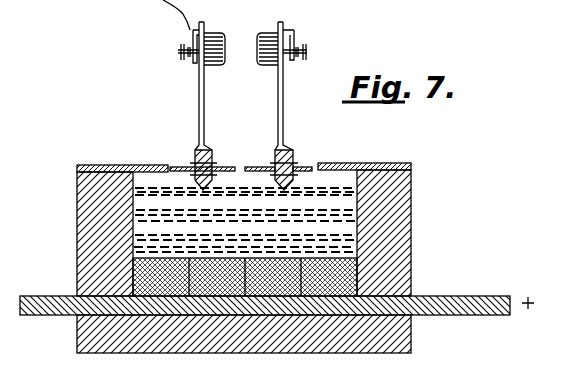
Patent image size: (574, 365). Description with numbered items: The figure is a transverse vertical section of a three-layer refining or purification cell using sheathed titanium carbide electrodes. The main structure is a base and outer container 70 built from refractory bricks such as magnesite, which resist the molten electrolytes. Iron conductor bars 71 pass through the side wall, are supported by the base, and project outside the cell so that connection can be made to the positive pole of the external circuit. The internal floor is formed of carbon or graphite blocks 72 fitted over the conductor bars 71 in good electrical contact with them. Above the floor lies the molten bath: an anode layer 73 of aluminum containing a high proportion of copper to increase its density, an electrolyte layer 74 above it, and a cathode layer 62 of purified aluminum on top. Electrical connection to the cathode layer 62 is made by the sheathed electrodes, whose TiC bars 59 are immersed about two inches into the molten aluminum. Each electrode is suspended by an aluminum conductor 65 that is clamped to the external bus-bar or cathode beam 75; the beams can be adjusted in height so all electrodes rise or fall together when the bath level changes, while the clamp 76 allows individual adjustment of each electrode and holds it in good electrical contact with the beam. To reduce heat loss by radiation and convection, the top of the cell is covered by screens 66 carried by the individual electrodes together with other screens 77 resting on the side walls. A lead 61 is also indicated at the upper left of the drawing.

The TiC bar 59 is at (195, 162).
The lead 61 is at (53, 1).
The cathode layer 62 is at (133, 191).
The aluminum conductor 65 is at (199, 95).
The screens 66 is at (235, 166).
The base and outer container 70 is at (411, 190).
The iron conductor bars 71 is at (438, 315).
The carbon or graphite blocks 72 is at (357, 272).
The anode layer 73 is at (140, 245).
The electrolyte layer 74 is at (133, 214).
The cathode beam 75 is at (214, 66).
The clamp 76 is at (292, 30).
The screens 77 is at (341, 163).